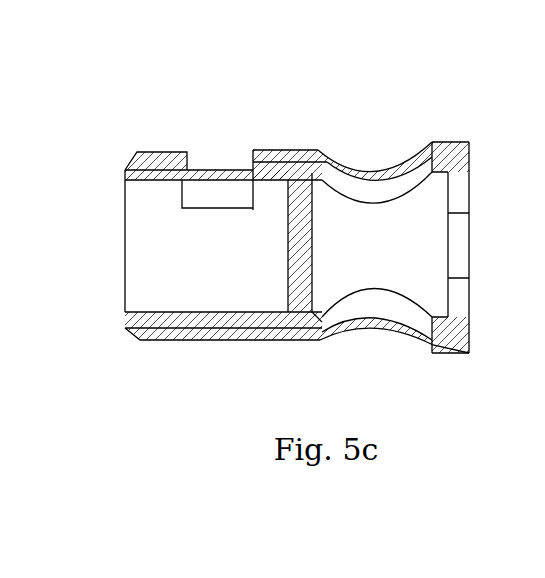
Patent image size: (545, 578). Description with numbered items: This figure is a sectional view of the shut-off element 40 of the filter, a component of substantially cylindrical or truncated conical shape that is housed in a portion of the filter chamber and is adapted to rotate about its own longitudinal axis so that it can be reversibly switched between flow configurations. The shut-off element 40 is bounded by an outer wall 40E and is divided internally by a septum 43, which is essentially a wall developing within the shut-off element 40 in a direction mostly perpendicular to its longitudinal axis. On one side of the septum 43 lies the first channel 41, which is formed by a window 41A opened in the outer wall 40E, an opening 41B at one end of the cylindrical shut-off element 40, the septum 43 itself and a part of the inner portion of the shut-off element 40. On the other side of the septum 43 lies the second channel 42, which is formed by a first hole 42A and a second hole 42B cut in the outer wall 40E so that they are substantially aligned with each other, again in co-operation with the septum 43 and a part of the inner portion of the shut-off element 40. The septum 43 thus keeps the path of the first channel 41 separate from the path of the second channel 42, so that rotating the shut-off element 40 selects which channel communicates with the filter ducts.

The shut-off element 40 is at (300, 100).
The outer wall 40E is at (219, 338).
The first channel 41 is at (178, 300).
The window 41A is at (223, 178).
The opening 41B is at (125, 248).
The second channel 42 is at (420, 235).
The first hole 42A is at (374, 178).
The second hole 42B is at (384, 308).
The septum 43 is at (303, 257).